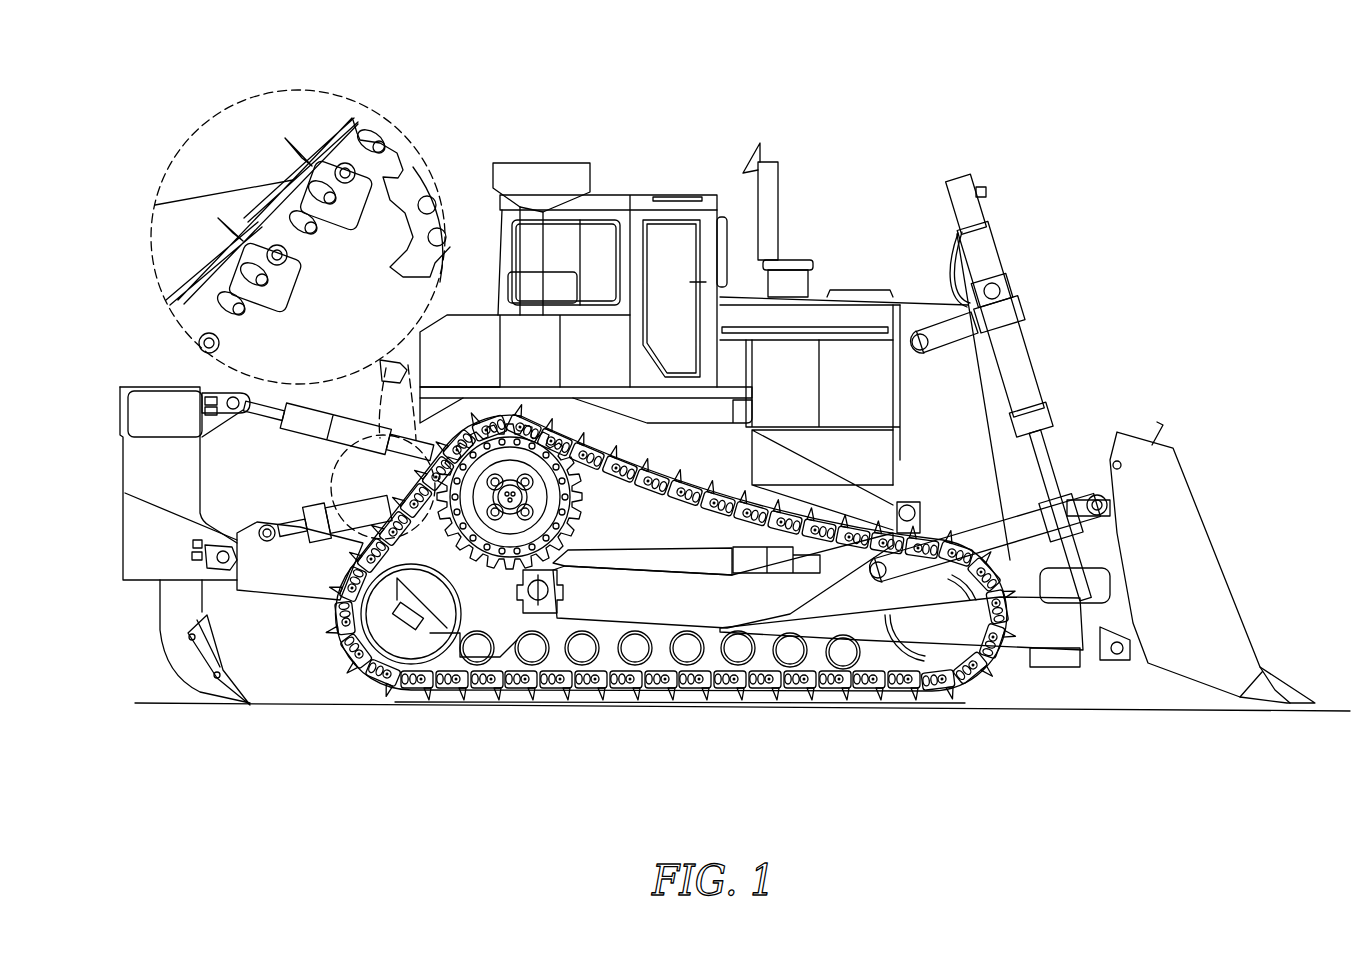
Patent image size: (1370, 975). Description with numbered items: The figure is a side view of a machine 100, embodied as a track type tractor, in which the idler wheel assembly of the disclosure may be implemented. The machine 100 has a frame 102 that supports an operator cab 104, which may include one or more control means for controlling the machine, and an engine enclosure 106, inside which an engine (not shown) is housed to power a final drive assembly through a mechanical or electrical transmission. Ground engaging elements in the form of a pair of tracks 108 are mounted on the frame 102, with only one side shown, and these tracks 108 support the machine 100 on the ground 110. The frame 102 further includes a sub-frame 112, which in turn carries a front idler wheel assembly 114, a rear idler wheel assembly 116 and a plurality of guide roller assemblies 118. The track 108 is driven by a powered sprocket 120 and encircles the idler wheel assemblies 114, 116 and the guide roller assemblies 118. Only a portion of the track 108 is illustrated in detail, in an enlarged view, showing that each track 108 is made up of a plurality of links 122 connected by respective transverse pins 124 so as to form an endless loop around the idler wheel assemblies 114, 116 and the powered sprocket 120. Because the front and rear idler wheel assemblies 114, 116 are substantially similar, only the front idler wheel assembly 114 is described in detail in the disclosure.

The machine 100 is at (1048, 145).
The frame 102 is at (998, 564).
The operator cab 104 is at (648, 193).
The engine enclosure 106 is at (867, 411).
The track 108 is at (352, 672).
The ground 110 is at (165, 703).
The sub-frame 112 is at (615, 557).
The front idler wheel assembly 114 is at (913, 658).
The rear idler wheel assembly 116 is at (415, 652).
The guide roller assembly 118 is at (638, 657).
The powered sprocket 120 is at (577, 511).
The link 122 is at (337, 232).
The transverse pin 124 is at (280, 262).